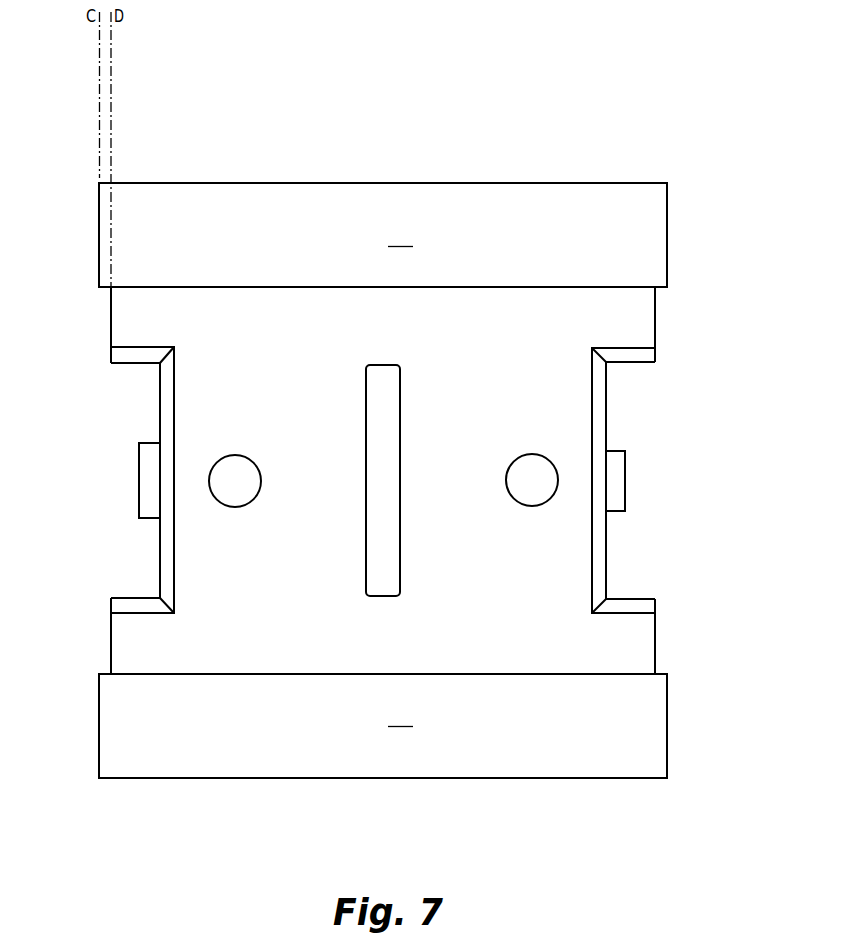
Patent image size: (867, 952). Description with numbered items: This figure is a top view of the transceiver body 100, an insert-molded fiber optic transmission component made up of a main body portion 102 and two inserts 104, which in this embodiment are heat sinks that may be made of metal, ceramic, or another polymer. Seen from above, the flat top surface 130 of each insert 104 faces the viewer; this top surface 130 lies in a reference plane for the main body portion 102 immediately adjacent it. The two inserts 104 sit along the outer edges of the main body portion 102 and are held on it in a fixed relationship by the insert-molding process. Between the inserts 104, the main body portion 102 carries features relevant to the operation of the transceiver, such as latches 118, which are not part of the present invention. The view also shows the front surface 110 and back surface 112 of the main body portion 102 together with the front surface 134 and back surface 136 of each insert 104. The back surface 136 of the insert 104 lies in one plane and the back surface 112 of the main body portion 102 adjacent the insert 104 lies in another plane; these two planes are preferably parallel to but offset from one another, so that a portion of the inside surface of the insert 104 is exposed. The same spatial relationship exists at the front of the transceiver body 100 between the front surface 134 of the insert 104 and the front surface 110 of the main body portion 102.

The insert-molded fiber optic transmission component 100 is at (724, 291).
The main body portion 102 is at (640, 648).
The insert 104 is at (387, 486).
The front surface 110 is at (655, 313).
The back surface 112 is at (111, 324).
The latches 118 is at (625, 480).
The top surface 130 is at (400, 476).
The front surface 134 is at (667, 240).
The back surface 136 is at (99, 237).